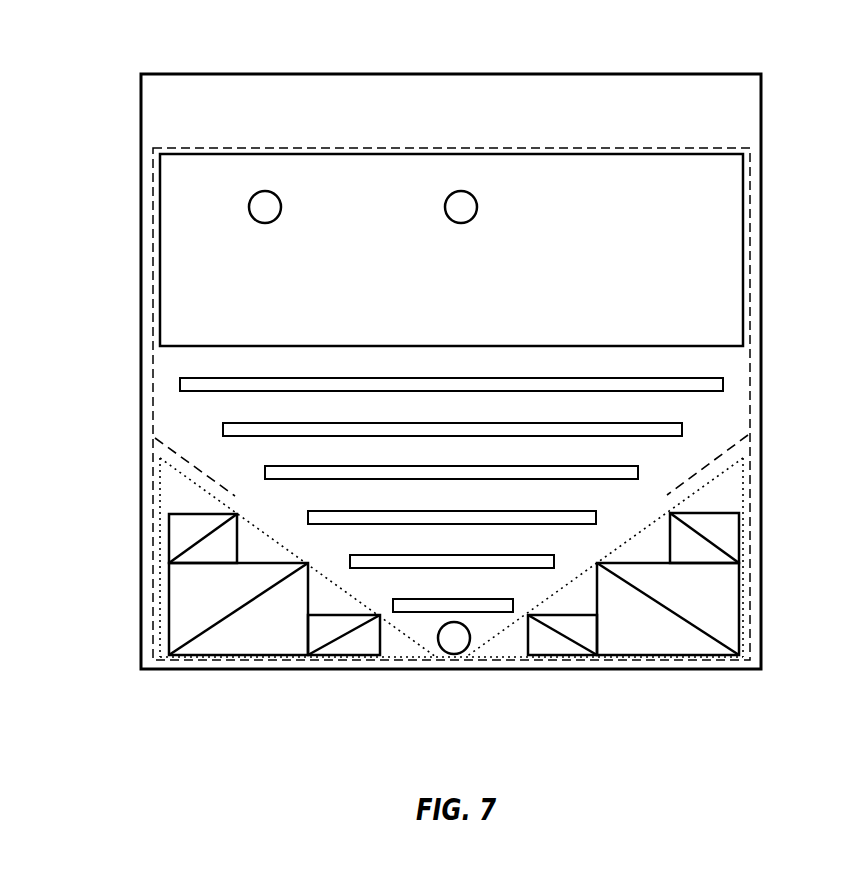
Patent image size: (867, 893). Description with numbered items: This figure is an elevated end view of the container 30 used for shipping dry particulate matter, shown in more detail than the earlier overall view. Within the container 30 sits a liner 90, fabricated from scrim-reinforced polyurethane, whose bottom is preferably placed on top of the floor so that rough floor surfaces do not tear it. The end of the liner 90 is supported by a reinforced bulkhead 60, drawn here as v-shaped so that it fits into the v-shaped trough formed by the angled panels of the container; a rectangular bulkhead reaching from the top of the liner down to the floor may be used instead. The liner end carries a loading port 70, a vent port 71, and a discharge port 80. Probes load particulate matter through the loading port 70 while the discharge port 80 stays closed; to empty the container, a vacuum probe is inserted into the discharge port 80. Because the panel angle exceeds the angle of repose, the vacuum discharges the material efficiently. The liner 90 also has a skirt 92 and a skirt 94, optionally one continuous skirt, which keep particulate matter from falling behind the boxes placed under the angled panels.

The container 30 is at (768, 127).
The liner 90 is at (451, 225).
The vent port 71 is at (231, 192).
The loading port 70 is at (429, 192).
The reinforced bulkhead 60 is at (737, 385).
The skirt 94 is at (185, 460).
The skirt 92 is at (720, 456).
The discharge port 80 is at (423, 665).